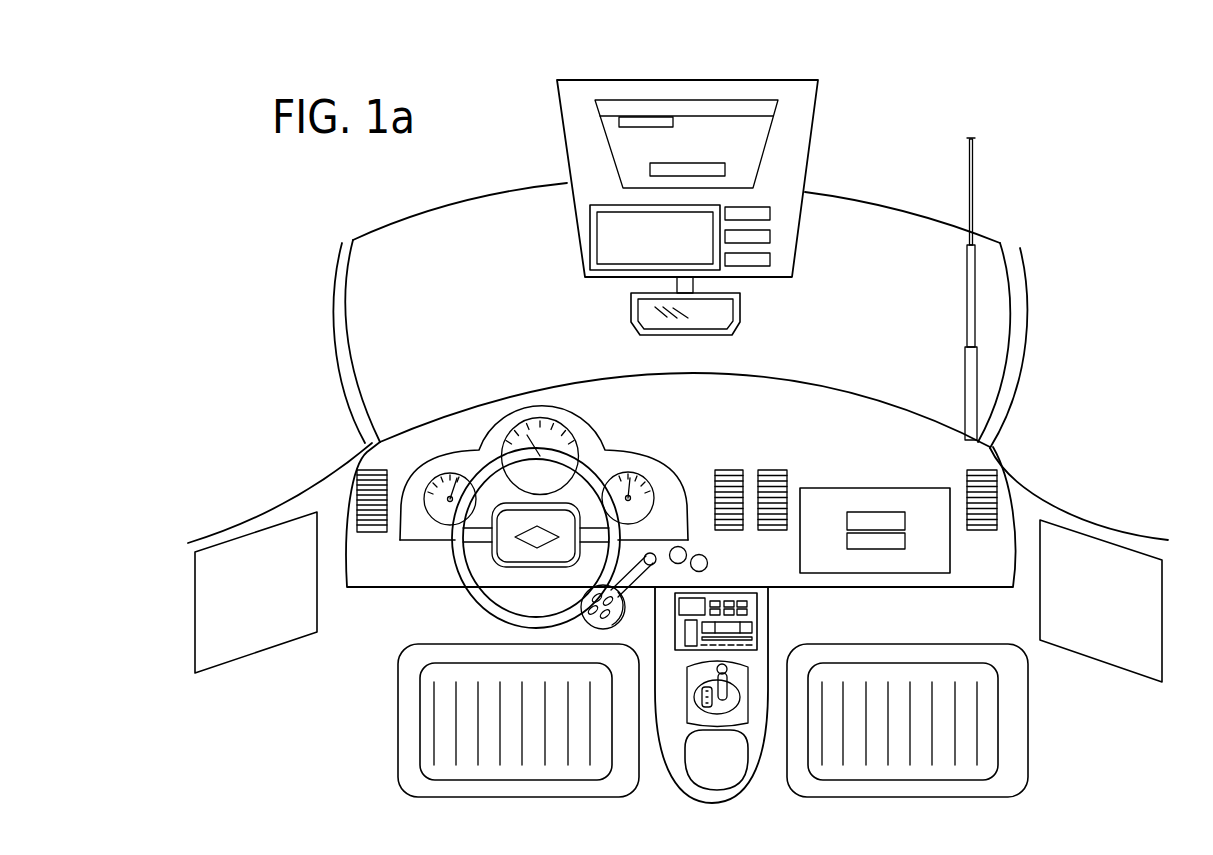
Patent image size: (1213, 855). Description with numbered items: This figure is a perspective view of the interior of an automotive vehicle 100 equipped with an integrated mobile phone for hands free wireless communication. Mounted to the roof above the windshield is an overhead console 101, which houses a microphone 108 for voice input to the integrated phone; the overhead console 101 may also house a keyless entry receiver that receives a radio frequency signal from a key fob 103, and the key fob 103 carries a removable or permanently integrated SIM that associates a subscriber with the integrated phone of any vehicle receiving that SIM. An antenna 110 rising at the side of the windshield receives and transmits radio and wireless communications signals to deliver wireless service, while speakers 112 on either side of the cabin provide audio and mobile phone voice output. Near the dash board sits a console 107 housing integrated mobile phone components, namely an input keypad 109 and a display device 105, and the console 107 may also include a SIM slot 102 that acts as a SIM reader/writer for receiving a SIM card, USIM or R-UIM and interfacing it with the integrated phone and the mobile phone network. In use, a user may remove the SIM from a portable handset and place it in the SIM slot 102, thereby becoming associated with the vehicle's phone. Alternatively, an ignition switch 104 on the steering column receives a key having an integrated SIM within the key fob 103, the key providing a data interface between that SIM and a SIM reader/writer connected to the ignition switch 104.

The automotive vehicle 100 is at (1030, 105).
The overhead console 101 is at (802, 140).
The SIM slot 102 is at (692, 640).
The key fob 103 is at (497, 628).
The ignition switch 104 is at (652, 553).
The display device 105 is at (693, 606).
The console 107 is at (766, 692).
The microphone 108 is at (583, 215).
The input keypad 109 is at (748, 605).
The antenna 110 is at (973, 187).
The speakers 112 is at (1150, 480).